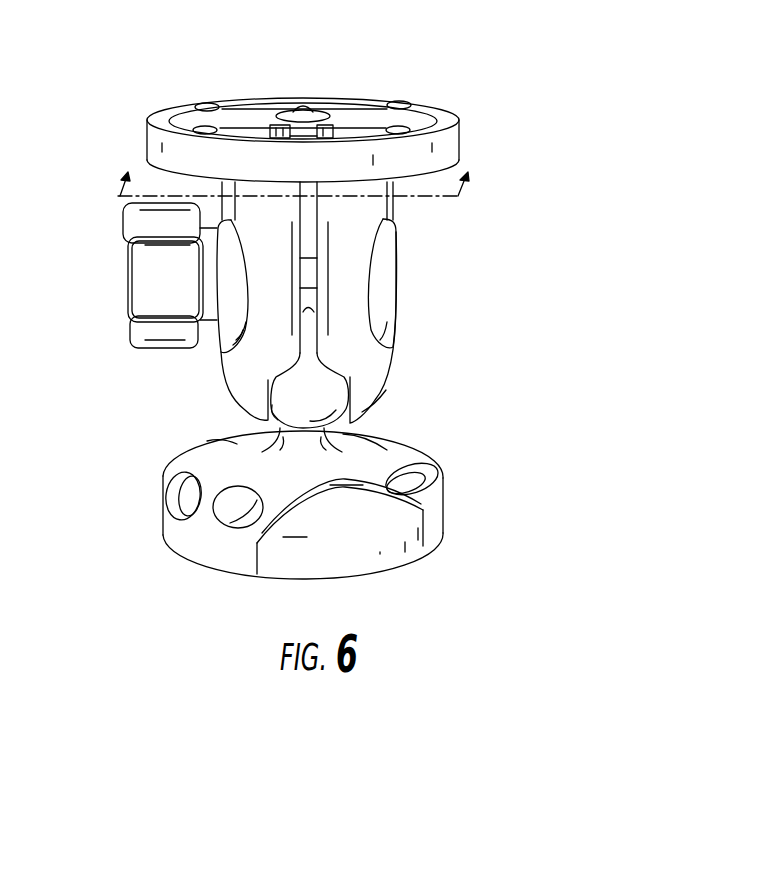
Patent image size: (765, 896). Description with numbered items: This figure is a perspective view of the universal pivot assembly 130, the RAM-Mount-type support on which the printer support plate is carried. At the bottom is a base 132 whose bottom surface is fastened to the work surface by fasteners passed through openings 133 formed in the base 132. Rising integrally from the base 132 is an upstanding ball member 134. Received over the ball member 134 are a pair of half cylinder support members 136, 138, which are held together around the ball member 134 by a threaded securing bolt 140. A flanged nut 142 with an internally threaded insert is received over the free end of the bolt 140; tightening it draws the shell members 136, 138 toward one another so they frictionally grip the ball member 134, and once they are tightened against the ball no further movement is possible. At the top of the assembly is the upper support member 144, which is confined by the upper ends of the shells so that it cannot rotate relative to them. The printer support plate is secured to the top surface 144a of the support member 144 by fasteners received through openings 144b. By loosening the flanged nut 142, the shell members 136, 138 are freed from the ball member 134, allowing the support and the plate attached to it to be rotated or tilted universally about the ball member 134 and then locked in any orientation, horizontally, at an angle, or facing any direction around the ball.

The universal pivot assembly 130 is at (486, 80).
The base 132 is at (372, 562).
The openings 133 is at (440, 487).
The ball member 134 is at (327, 388).
The half cylinder support member 136 is at (365, 358).
The half cylinder support member 138 is at (238, 363).
The threaded securing bolt 140 is at (312, 272).
The flanged nut 142 is at (130, 273).
The upper support member 144 is at (458, 135).
The top surface 144a is at (313, 108).
The openings 144b is at (198, 128).